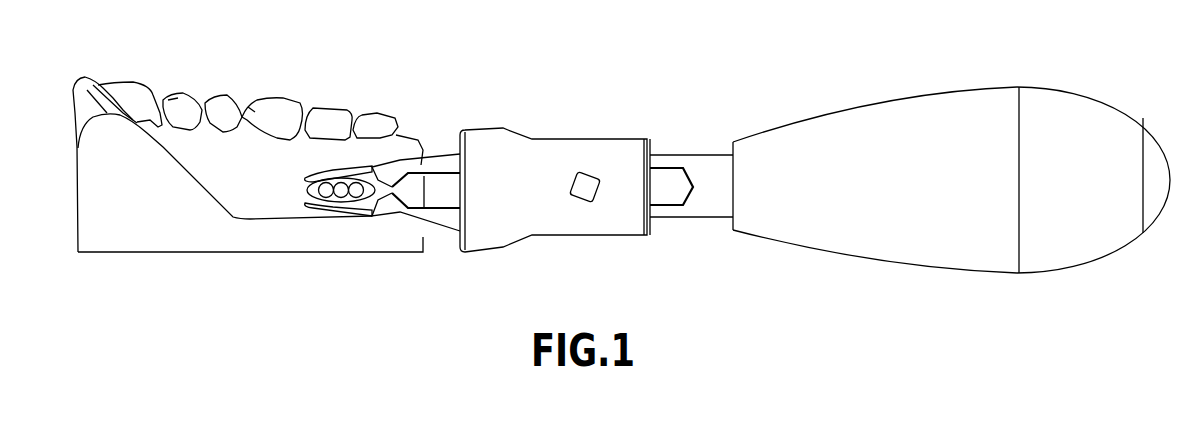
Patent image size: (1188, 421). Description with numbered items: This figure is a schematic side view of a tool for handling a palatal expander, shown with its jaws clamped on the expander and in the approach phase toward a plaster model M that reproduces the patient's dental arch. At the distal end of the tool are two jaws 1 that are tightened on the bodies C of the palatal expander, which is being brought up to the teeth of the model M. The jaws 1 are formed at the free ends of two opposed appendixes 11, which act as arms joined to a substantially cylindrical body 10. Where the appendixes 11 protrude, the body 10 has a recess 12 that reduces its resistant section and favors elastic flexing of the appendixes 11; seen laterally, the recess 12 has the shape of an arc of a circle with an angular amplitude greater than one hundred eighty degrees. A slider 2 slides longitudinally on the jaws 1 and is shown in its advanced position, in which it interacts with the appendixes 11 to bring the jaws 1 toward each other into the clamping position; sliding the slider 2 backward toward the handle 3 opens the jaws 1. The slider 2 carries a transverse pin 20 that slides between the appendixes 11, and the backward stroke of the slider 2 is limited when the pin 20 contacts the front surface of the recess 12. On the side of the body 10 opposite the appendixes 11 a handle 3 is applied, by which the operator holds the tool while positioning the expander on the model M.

The plaster model M is at (123, 233).
The bodies of the palatal expander C is at (307, 191).
The jaws 1 is at (341, 168).
The appendixes 11 is at (438, 157).
The slider 2 is at (606, 134).
The transverse pin 20 is at (572, 185).
The body 10 is at (705, 157).
The recess 12 is at (672, 190).
The handle 3 is at (831, 237).